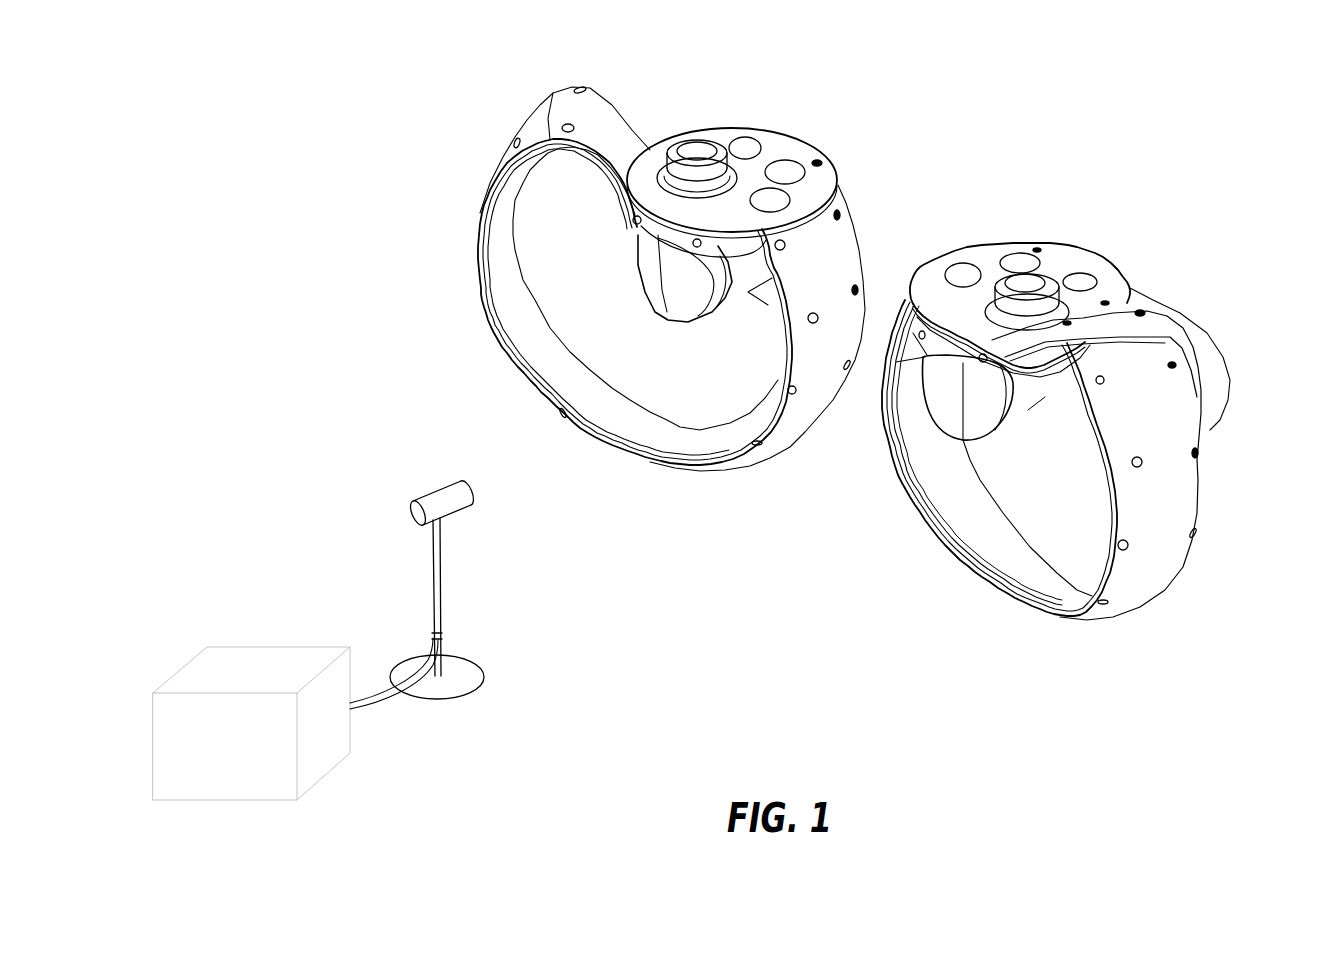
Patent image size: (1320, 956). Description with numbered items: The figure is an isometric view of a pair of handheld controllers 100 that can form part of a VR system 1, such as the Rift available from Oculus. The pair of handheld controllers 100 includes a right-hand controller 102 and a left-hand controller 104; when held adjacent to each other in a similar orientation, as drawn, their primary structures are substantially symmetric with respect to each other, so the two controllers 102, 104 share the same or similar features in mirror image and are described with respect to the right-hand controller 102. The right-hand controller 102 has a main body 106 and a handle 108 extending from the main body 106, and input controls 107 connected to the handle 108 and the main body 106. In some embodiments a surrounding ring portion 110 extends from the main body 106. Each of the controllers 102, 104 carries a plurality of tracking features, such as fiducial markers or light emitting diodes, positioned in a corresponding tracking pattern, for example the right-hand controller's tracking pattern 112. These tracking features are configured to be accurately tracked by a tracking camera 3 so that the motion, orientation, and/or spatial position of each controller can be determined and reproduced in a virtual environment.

The VR system 1 is at (252, 635).
The tracking camera 3 is at (385, 502).
The pair of handheld controllers 100 is at (854, 339).
The right-hand controller 102 is at (699, 291).
The left-hand controller 104 is at (1145, 261).
The main body 106 is at (760, 117).
The input controls 107 is at (712, 117).
The handle 108 is at (858, 218).
The surrounding ring portion 110 is at (645, 462).
The tracking pattern 112 is at (795, 400).